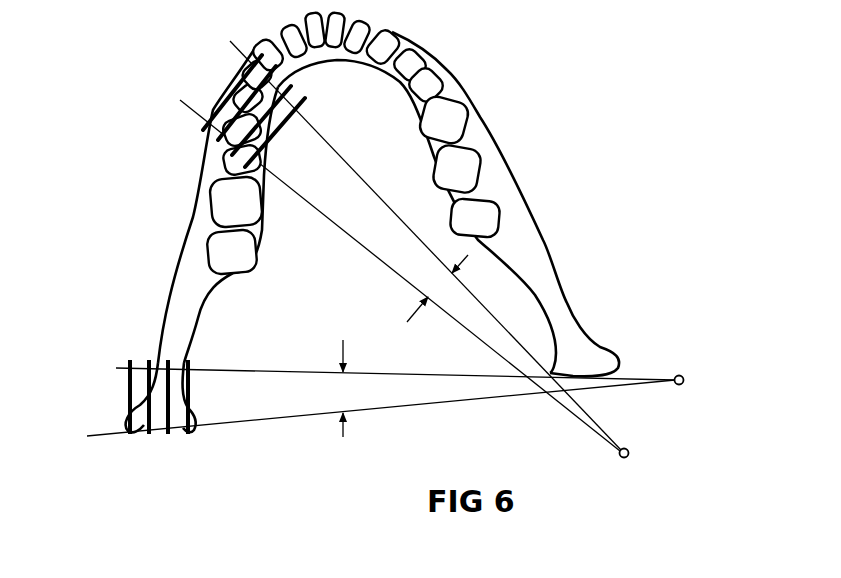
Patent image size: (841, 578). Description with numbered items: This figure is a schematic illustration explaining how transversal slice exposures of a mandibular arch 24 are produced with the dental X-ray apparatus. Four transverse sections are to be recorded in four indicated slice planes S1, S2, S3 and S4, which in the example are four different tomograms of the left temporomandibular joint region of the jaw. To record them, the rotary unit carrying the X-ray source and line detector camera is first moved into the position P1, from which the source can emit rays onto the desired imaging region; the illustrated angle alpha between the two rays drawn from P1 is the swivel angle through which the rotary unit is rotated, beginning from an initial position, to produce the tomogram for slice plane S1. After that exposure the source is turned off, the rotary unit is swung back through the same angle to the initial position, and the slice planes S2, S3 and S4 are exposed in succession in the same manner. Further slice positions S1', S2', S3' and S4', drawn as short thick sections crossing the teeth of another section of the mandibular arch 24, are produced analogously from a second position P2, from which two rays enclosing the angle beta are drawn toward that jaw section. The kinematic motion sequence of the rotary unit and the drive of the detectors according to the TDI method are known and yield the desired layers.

The lower jaw 24 is at (527, 233).
The slice plane S1 is at (213, 418).
The slice plane S2 is at (198, 439).
The slice plane S3 is at (122, 439).
The slice plane S4 is at (108, 418).
The slice position S1' is at (204, 176).
The slice position S2' is at (170, 151).
The slice position S3' is at (164, 107).
The slice position S4' is at (195, 92).
The position P1 is at (684, 380).
The position P2 is at (629, 453).